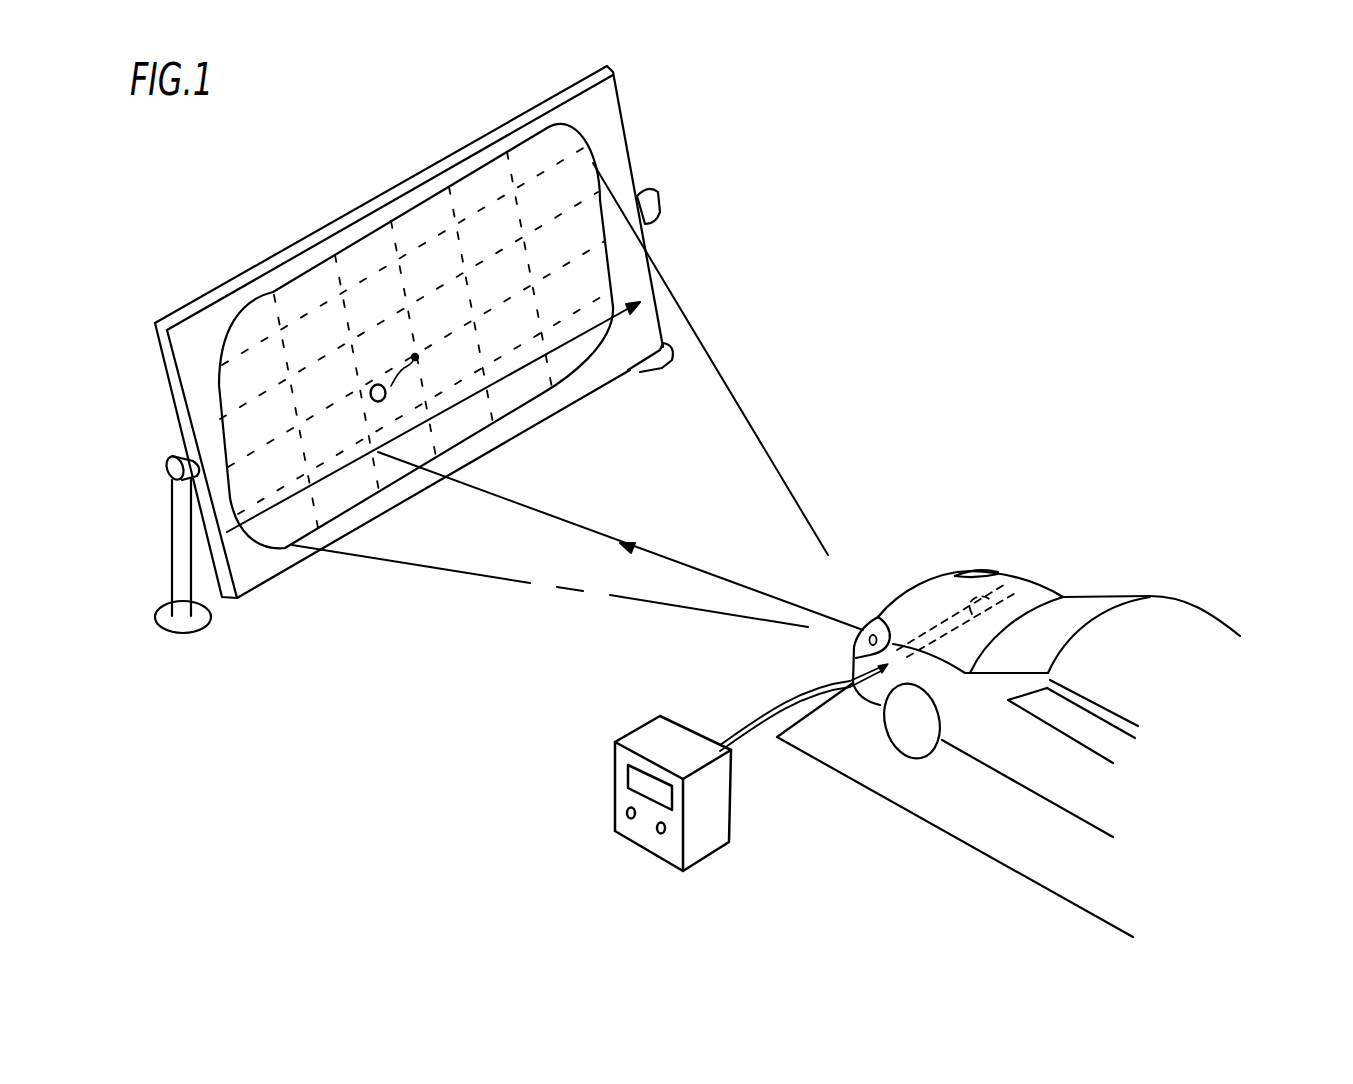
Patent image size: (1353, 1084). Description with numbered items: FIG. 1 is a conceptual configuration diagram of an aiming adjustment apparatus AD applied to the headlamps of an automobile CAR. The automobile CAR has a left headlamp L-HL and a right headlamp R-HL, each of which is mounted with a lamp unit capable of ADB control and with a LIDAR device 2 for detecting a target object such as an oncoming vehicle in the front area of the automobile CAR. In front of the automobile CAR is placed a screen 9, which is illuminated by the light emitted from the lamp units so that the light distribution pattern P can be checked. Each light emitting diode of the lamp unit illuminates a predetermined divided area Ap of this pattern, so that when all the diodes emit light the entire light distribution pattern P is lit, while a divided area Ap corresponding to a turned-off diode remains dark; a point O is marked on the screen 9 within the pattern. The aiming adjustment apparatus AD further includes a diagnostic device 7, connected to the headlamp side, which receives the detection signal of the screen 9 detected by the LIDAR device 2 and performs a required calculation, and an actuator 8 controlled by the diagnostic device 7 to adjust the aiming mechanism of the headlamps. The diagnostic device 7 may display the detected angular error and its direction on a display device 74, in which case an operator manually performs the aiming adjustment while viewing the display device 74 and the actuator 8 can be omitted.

The light distribution pattern P is at (513, 150).
The divided area Ap is at (432, 225).
The origin point O is at (395, 378).
The screen 9 is at (637, 195).
The automobile CAR is at (1155, 585).
The left headlamp L-HL is at (853, 645).
The right headlamp R-HL is at (967, 570).
The LIDAR device 2 is at (867, 628).
The actuator 8 is at (1028, 582).
The aiming adjustment apparatus AD is at (606, 707).
The diagnostic device 7 is at (732, 829).
The display device 74 is at (627, 790).